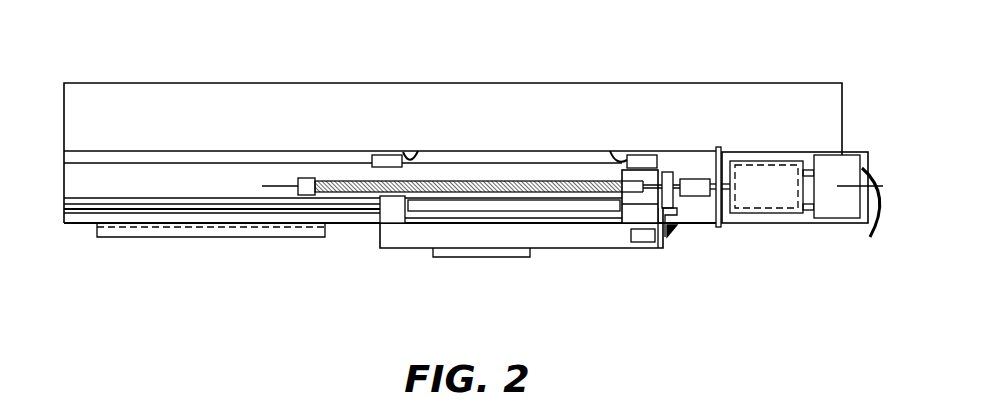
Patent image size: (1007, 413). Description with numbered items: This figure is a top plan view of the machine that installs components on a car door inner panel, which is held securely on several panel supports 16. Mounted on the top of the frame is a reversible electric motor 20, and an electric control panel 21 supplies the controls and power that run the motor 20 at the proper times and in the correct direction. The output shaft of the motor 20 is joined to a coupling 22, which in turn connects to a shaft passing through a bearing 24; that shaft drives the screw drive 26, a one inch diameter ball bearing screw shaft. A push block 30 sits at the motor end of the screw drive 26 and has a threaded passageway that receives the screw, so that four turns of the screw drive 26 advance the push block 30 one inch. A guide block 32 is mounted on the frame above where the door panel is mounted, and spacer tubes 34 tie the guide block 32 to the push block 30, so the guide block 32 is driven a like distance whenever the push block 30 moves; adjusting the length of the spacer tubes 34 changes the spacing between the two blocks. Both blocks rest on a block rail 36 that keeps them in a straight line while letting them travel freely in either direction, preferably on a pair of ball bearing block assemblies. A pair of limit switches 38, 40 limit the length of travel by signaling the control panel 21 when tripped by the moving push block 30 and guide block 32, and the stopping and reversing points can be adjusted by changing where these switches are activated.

The panel supports 16 is at (217, 237).
The reversible electric motor 20 is at (843, 210).
The electric control panel 21 is at (497, 257).
The coupling 22 is at (700, 187).
The bearing 24 is at (675, 197).
The screw drive 26 is at (340, 180).
The push block 30 is at (638, 218).
The guide block 32 is at (393, 218).
The spacer tubes 34 is at (577, 212).
The block rail 36 is at (223, 200).
The limit switch 38 is at (642, 155).
The limit switch 40 is at (391, 155).